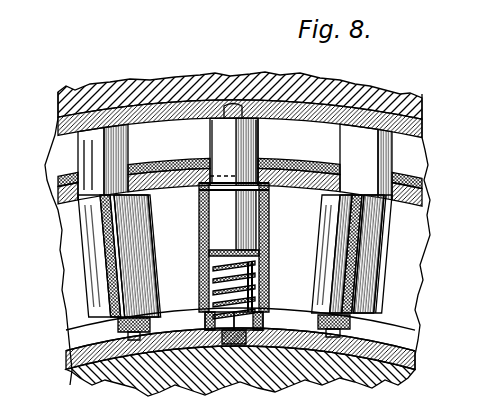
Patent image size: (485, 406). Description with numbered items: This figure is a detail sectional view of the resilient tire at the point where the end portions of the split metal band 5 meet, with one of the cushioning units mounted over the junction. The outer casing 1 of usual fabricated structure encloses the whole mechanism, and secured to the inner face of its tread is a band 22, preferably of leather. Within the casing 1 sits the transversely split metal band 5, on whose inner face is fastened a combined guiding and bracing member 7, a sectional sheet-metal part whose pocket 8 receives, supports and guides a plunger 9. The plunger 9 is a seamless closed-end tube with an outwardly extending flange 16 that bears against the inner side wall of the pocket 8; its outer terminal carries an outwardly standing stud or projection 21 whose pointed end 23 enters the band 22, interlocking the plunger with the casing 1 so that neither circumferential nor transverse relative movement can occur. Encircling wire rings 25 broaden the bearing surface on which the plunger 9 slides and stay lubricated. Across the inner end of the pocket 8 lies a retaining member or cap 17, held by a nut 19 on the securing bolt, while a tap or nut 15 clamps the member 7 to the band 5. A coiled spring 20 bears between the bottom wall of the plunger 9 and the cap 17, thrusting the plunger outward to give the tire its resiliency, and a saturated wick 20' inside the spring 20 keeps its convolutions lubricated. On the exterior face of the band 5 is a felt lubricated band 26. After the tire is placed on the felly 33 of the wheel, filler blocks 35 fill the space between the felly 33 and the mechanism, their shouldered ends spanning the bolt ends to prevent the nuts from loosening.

The casing 1 is at (226, 92).
The pointed end 23 is at (240, 104).
The stud or projection 21 is at (238, 119).
The band 22 is at (310, 119).
The plunger 9 is at (99, 186).
The metal band 5 is at (288, 191).
The lubricated band 26 is at (80, 197).
The pocket 8 is at (155, 239).
The combined guiding and bracing member 7 is at (130, 269).
The wire ring 25 is at (248, 197).
The outwardly extending flange 16 is at (262, 267).
The coiled spring 20 is at (257, 290).
The saturated wick 20' is at (216, 274).
The tap or nut 15 is at (206, 325).
The retaining member or cap 17 is at (264, 329).
The nut 19 is at (366, 320).
The felly 33 is at (284, 365).
The filler block 35 is at (128, 357).